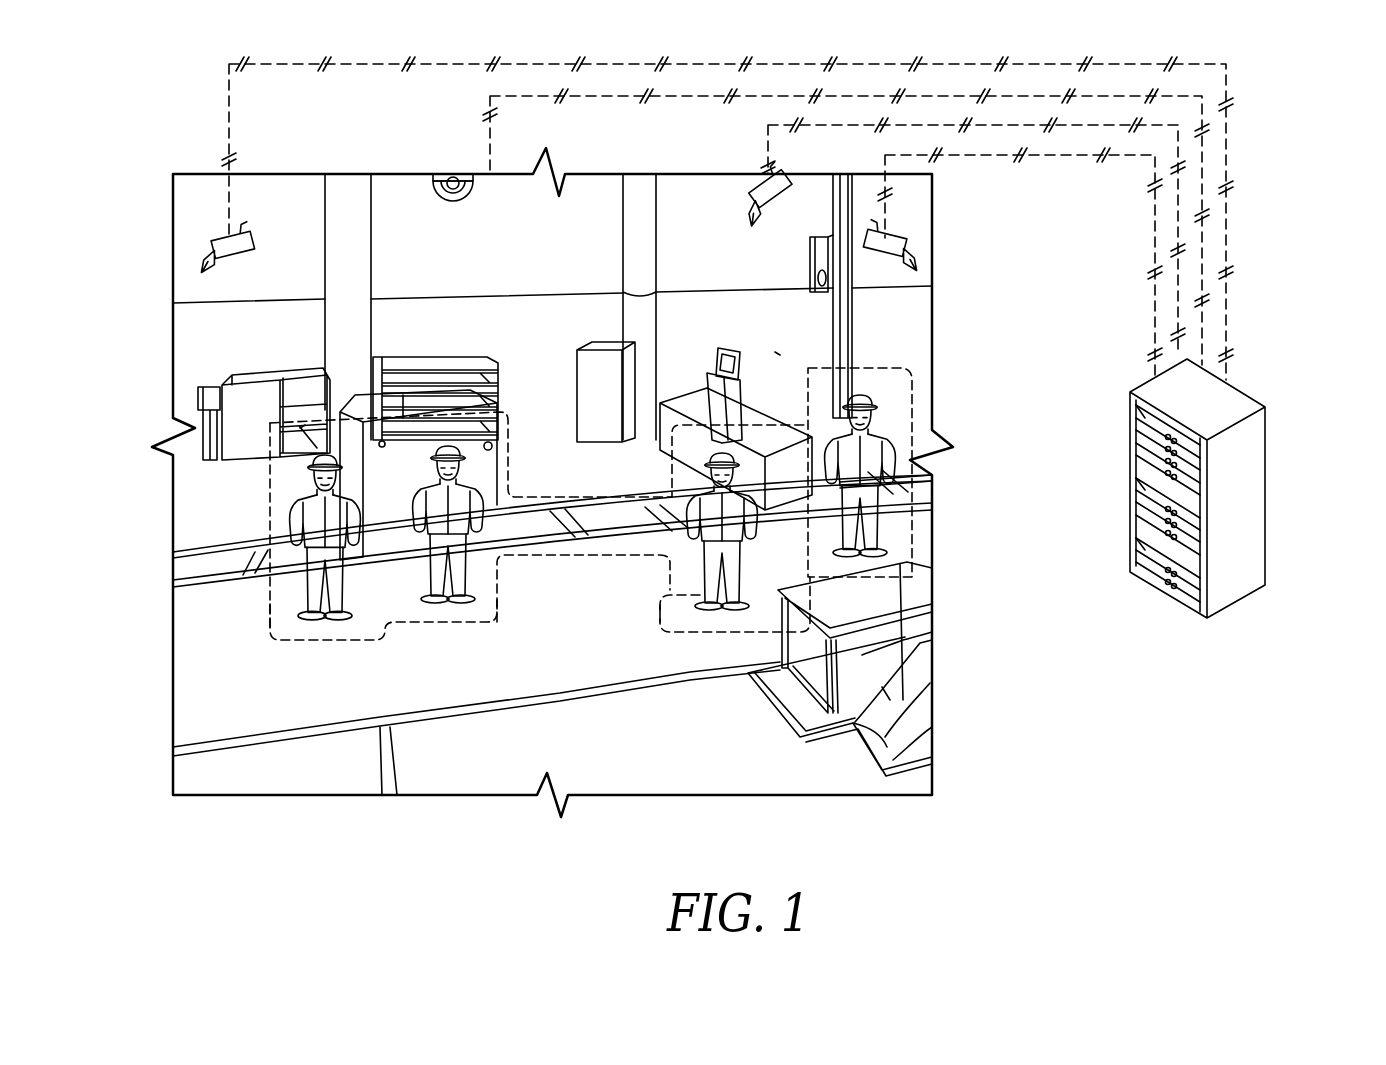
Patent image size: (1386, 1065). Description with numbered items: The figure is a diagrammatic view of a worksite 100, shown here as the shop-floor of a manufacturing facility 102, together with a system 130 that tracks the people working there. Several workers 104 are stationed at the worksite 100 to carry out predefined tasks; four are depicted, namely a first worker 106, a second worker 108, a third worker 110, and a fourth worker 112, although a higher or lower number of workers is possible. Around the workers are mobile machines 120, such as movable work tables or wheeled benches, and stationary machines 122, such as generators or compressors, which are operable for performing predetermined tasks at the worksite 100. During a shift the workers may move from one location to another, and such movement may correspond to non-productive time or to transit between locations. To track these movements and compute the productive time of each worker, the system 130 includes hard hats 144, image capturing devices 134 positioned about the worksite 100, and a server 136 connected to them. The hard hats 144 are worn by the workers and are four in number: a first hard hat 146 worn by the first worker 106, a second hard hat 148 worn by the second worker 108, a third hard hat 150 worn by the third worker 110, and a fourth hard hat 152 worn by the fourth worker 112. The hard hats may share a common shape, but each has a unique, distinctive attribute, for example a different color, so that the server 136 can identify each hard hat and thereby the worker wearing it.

The worksite 100 is at (552, 484).
The manufacturing facility 102 is at (494, 482).
The workers 104 is at (182, 655).
The first worker 106 is at (230, 537).
The second worker 108 is at (483, 720).
The third worker 110 is at (689, 719).
The fourth worker 112 is at (928, 508).
The mobile machines 120 is at (539, 476).
The stationary machines 122 is at (534, 400).
The system 130 is at (801, 218).
The image capturing devices 134 is at (560, 191).
The server 136 is at (1232, 488).
The hard hats 144 is at (545, 405).
The first hard hat 146 is at (199, 414).
The second hard hat 148 is at (487, 437).
The third hard hat 150 is at (736, 413).
The fourth hard hat 152 is at (915, 468).